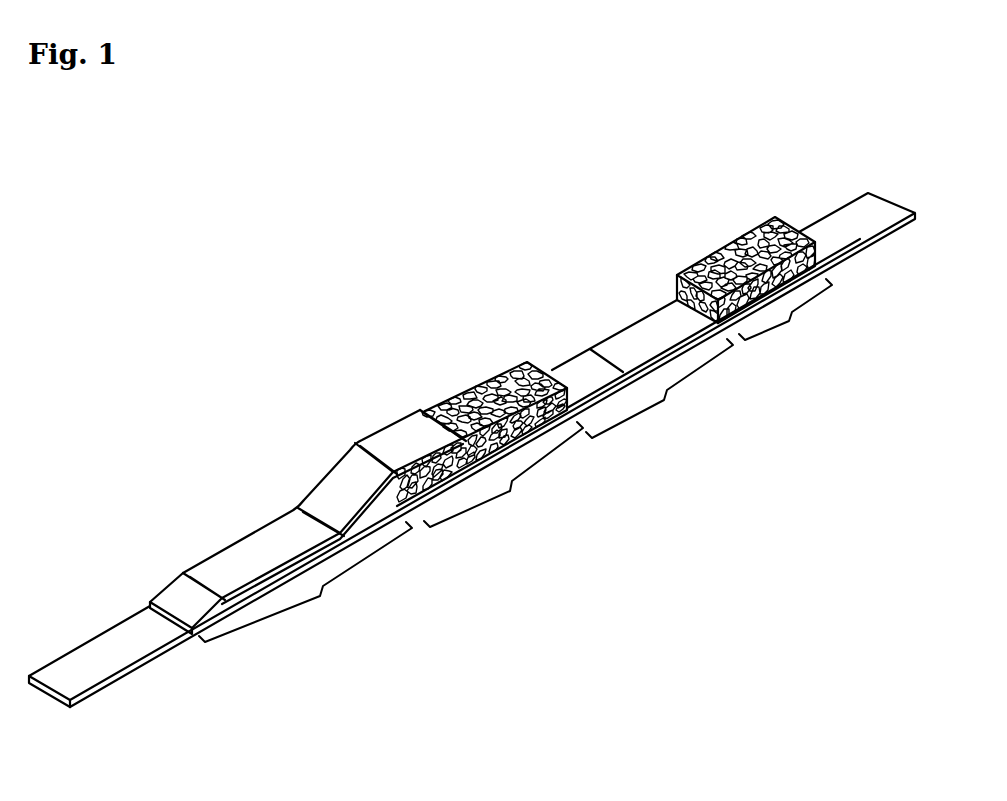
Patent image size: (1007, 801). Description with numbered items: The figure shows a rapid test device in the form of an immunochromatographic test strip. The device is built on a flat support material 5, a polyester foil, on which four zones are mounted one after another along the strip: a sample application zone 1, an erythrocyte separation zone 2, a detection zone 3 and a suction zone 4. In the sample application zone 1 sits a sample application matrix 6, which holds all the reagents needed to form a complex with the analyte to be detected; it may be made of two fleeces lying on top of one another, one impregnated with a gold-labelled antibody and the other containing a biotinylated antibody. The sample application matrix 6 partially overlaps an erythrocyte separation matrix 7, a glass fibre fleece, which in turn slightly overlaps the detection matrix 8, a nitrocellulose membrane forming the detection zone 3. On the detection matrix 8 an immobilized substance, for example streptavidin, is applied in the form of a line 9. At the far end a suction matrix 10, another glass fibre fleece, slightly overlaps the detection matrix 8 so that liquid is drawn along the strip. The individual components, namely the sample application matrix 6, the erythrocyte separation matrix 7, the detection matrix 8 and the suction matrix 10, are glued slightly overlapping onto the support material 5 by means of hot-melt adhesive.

The sample application zone 1 is at (305, 582).
The erythrocyte separation zone 2 is at (503, 474).
The detection zone 3 is at (659, 388).
The suction zone 4 is at (785, 316).
The support material 5 is at (107, 643).
The sample application matrix 6 is at (341, 545).
The erythrocyte separation matrix 7 is at (483, 403).
The detection matrix 8 is at (653, 330).
The line 9 is at (597, 347).
The suction matrix 10 is at (727, 262).